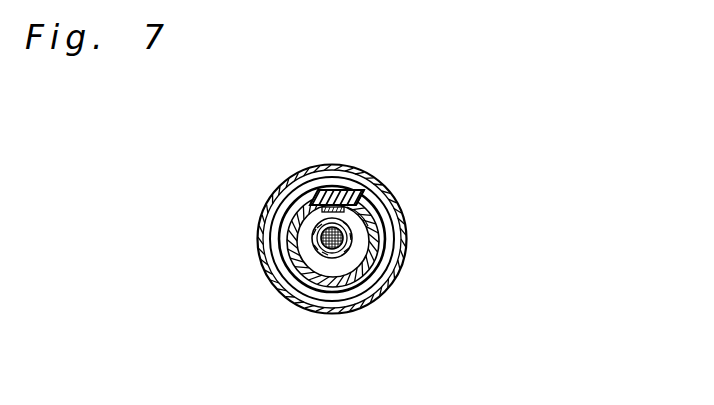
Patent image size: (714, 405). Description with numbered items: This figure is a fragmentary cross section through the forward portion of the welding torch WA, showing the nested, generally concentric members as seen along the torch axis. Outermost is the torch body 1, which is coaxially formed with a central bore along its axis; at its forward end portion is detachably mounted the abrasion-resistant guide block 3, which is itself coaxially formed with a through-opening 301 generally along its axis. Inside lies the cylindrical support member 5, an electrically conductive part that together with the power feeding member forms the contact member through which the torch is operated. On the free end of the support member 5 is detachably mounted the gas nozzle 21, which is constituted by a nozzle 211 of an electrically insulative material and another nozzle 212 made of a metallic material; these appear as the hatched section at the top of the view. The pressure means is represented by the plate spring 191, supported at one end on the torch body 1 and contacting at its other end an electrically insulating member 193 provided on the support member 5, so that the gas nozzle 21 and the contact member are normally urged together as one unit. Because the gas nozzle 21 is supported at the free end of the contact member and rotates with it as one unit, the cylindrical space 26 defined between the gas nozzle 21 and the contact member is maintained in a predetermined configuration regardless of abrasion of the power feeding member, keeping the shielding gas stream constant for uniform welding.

The torch body 1 is at (352, 246).
The guide block 3 is at (372, 286).
The support member 5 is at (350, 236).
The gas nozzle 21 is at (327, 122).
The cylindrical space 26 is at (292, 229).
The plate spring 191 is at (356, 222).
The electrically insulating member 193 is at (348, 186).
The nozzle 211 is at (337, 189).
The nozzle 212 is at (313, 189).
The through-opening 301 is at (306, 274).
The welding torch WA is at (488, 150).